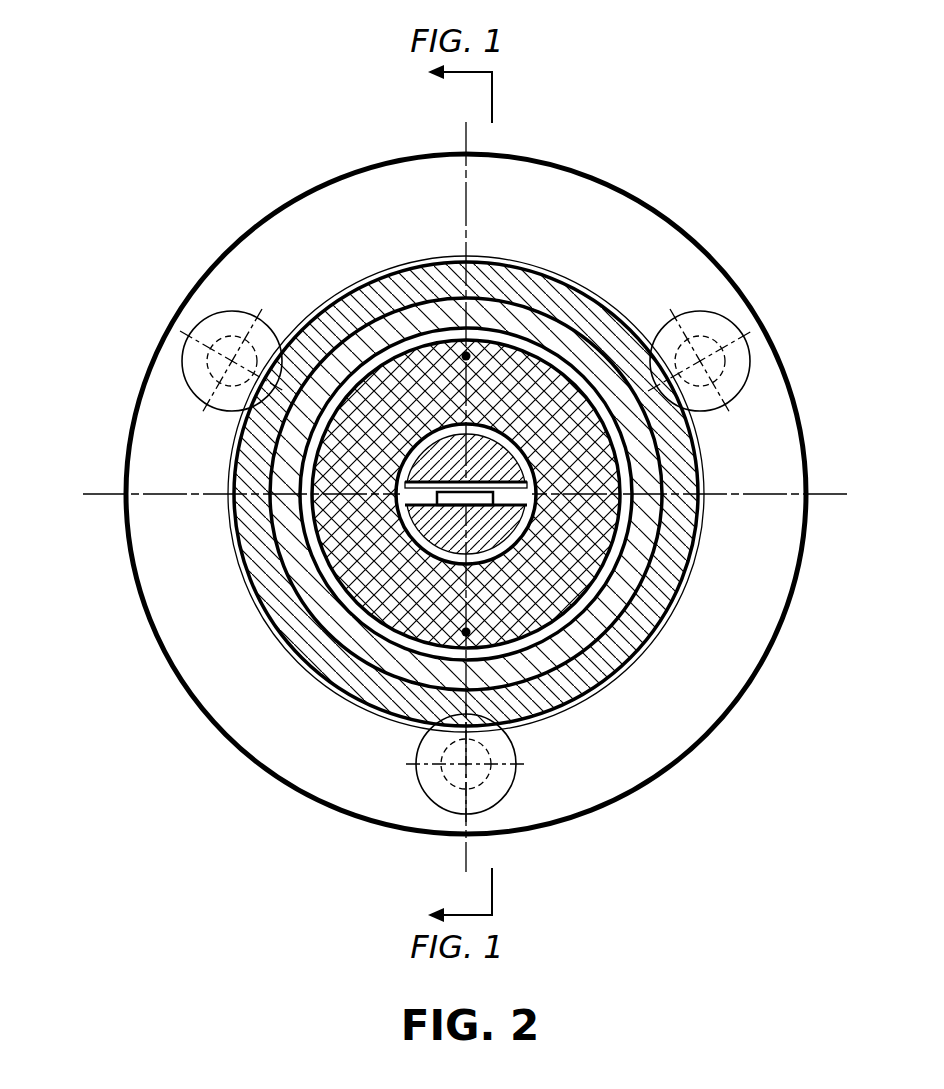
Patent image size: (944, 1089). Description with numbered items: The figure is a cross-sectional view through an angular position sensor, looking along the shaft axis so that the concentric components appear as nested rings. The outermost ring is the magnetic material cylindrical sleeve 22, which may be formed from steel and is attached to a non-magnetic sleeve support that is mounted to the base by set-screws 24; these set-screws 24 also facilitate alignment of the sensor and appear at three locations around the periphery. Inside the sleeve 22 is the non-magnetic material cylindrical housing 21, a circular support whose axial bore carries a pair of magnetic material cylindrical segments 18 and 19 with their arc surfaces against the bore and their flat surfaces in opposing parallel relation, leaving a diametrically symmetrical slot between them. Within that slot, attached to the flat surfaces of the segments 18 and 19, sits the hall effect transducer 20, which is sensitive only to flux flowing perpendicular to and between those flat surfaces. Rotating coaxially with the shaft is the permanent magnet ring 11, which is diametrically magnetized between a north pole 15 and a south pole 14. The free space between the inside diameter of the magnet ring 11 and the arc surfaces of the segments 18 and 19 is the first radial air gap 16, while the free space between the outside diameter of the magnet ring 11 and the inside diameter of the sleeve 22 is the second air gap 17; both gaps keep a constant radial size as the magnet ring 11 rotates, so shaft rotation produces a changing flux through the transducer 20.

The permanent magnet ring 11 is at (537, 607).
The south pole 14 is at (557, 683).
The north pole 15 is at (413, 303).
The first radial air gap 16 is at (385, 670).
The second air gap 17 is at (350, 612).
The magnetic material cylindrical segment 18 is at (387, 420).
The magnetic material cylindrical segment 19 is at (290, 590).
The hall effect transducer 20 is at (540, 480).
The non-magnetic material cylindrical housing 21 is at (668, 597).
The magnetic material cylindrical sleeve 22 is at (287, 470).
The set-screws 24 is at (192, 360).